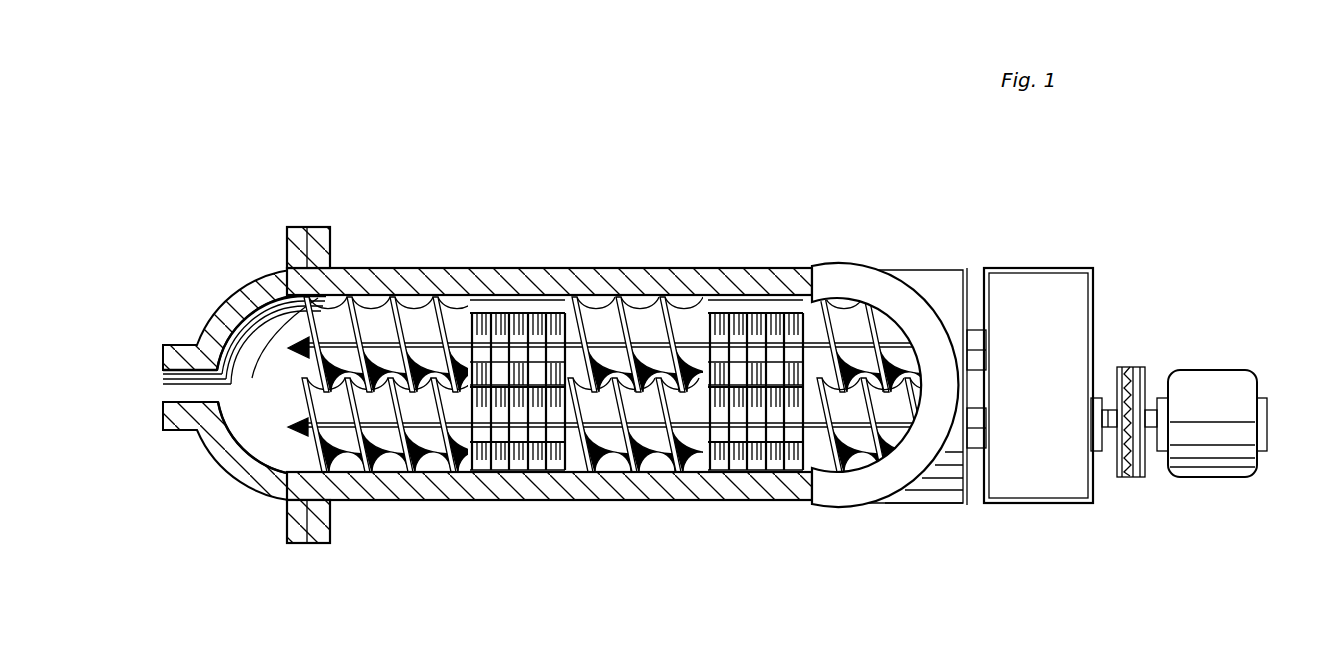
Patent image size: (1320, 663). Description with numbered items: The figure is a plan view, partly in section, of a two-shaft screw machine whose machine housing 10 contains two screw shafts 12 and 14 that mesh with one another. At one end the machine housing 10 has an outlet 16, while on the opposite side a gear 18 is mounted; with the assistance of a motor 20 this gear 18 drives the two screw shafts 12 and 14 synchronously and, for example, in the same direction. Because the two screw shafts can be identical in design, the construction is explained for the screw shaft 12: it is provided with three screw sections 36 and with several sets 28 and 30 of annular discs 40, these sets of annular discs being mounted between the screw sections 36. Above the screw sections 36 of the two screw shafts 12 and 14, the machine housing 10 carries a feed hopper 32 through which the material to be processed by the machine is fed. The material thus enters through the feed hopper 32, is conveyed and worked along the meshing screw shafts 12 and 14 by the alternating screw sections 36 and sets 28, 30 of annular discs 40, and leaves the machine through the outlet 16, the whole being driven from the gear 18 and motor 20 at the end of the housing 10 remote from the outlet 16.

The machine housing 10 is at (520, 262).
The screw shaft 12 is at (306, 430).
The screw shaft 14 is at (266, 296).
The outlet 16 is at (177, 383).
The gear 18 is at (1040, 280).
The motor 20 is at (1210, 373).
The set of annular discs 28 is at (567, 457).
The set of annular discs 30 is at (777, 320).
The feed hopper 32 is at (868, 272).
The screw sections 36 is at (410, 337).
The annular discs 40 is at (540, 480).